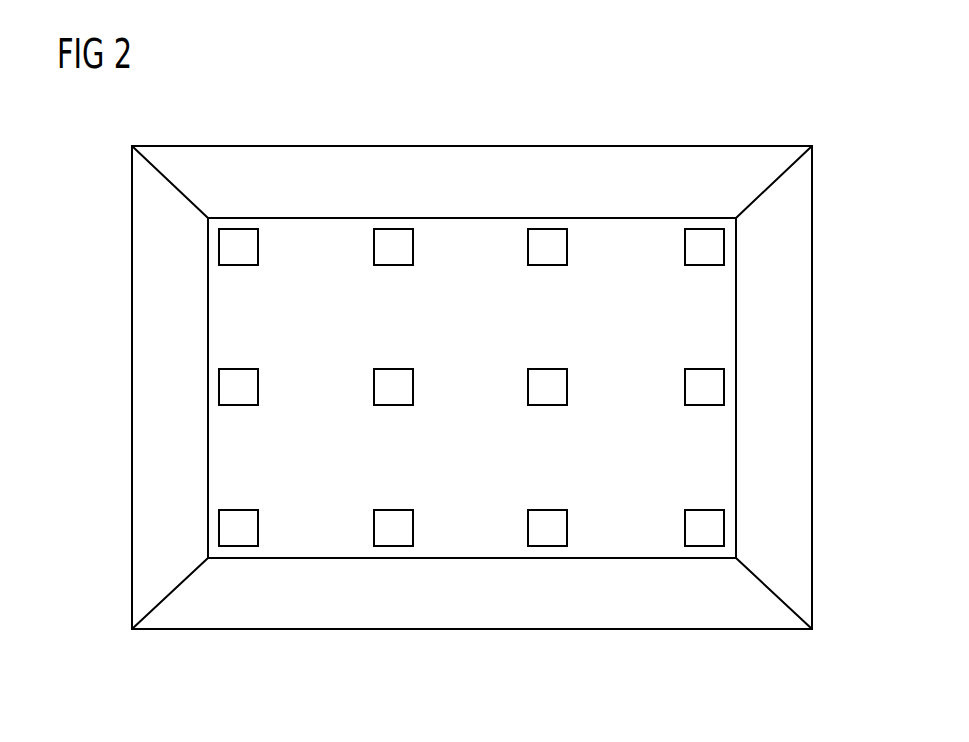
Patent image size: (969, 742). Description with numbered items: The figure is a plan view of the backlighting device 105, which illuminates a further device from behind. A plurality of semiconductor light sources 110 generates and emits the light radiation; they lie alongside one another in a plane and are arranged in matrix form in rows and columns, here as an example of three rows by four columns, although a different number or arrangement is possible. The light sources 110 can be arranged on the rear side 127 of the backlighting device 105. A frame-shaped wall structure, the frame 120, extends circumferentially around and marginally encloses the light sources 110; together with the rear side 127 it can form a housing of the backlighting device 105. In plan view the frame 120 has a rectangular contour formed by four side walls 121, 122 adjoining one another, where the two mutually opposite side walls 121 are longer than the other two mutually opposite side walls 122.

The backlighting device 105 is at (288, 103).
The semiconductor light sources 110 is at (237, 250).
The frame 120 is at (413, 160).
The side walls 121 is at (472, 160).
The side walls 122 is at (147, 313).
The rear side 127 is at (620, 243).